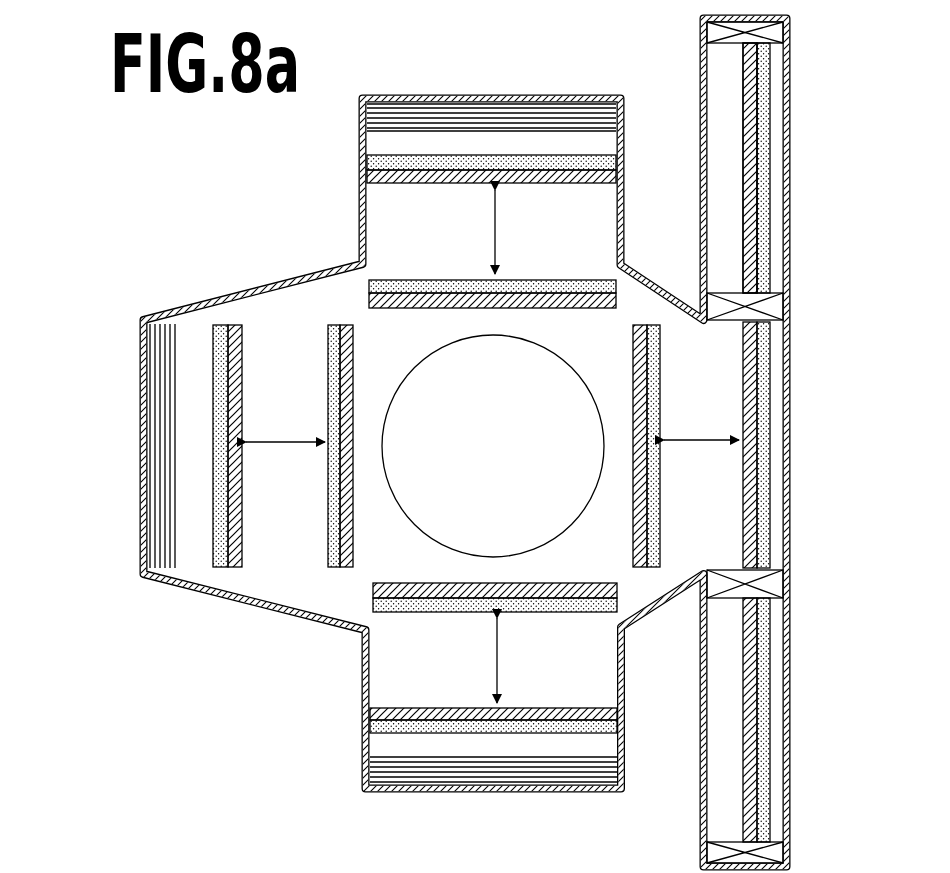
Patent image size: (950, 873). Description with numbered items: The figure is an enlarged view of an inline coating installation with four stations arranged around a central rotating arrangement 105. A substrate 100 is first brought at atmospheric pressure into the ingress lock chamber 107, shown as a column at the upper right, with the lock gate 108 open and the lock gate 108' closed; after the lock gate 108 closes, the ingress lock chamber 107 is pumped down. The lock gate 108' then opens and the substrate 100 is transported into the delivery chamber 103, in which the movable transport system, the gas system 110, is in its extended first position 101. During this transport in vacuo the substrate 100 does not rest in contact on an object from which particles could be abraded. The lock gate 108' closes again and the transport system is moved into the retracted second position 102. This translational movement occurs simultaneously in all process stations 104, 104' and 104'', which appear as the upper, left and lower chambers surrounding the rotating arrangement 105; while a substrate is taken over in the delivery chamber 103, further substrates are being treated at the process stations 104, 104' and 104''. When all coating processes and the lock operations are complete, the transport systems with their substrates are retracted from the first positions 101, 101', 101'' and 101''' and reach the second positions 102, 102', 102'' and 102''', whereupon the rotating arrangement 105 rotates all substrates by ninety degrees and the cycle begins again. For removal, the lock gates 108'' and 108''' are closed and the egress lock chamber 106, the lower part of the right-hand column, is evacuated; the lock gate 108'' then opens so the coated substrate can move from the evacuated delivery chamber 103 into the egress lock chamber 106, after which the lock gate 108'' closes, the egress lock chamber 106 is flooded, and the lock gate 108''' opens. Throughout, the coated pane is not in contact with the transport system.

The substrate 100 is at (648, 323).
The first position 101 is at (797, 445).
The first position 101' is at (456, 158).
The first position 101'' is at (206, 410).
The first position 101''' is at (456, 704).
The second position 102 is at (675, 446).
The second position 102' is at (492, 257).
The second position 102'' is at (308, 445).
The second position 102''' is at (495, 622).
The delivery chamber 103 is at (722, 400).
The process station 104 is at (491, 90).
The process station 104' is at (128, 439).
The process station 104'' is at (453, 766).
The rotating arrangement 105 is at (568, 388).
The egress lock chamber 106 is at (778, 755).
The ingress lock chamber 107 is at (778, 160).
The lock gate 108 is at (780, 21).
The lock gate 108' is at (782, 301).
The lock gate 108'' is at (783, 589).
The lock gate 108''' is at (788, 857).
The gas system 110 is at (742, 97).